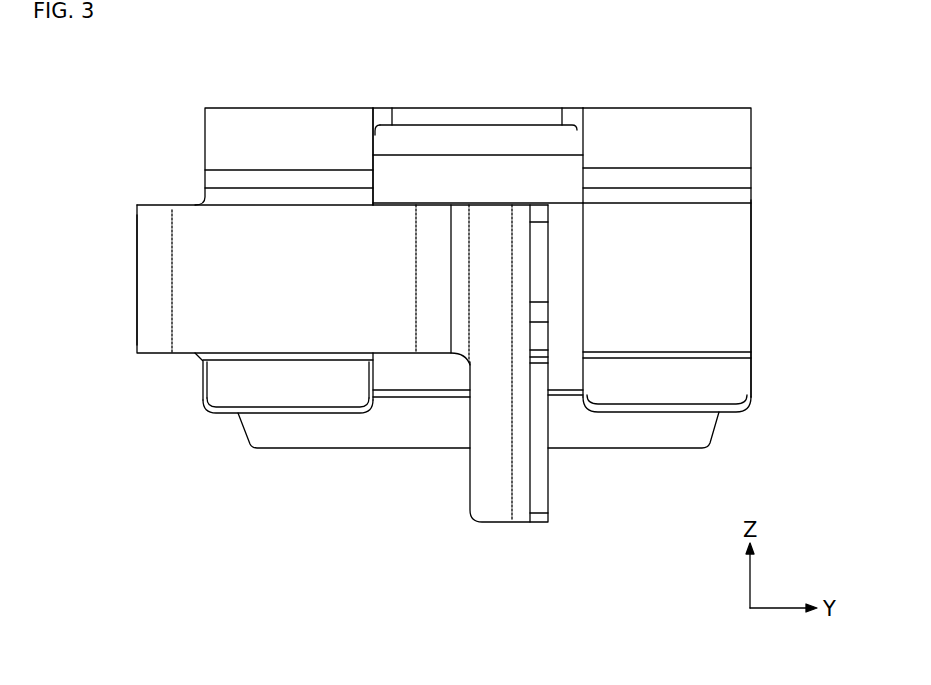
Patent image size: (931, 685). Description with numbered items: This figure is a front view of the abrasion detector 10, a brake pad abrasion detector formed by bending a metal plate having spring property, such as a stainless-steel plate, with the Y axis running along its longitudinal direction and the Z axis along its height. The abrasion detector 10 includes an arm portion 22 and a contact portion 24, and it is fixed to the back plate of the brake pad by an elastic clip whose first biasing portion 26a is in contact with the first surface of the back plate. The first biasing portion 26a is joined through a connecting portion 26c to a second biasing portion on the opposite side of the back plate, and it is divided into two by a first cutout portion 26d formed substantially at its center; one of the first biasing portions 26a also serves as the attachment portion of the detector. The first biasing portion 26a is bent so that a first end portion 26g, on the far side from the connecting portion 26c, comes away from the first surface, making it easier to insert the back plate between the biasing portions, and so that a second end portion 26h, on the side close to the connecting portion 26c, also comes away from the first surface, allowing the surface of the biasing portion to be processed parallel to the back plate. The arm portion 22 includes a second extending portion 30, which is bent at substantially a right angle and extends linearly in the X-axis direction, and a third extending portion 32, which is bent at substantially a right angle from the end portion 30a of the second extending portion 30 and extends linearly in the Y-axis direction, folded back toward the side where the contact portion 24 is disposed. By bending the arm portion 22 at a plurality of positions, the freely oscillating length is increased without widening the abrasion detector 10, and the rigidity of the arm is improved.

The abrasion detector 10 is at (150, 183).
The arm portion 22 is at (205, 338).
The contact portion 24 is at (542, 465).
The first biasing portion 26a is at (743, 272).
The connecting portion 26c is at (483, 113).
The first cutout portion 26d is at (378, 141).
The first end portion 26g is at (285, 393).
The second end portion 26h is at (303, 115).
The second extending portion 30 is at (135, 225).
The end portion of second extending portion 30a is at (145, 310).
The third extending portion 32 is at (328, 322).